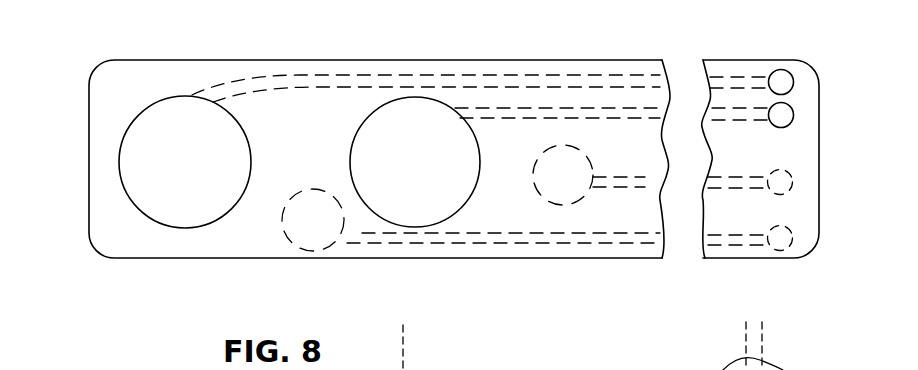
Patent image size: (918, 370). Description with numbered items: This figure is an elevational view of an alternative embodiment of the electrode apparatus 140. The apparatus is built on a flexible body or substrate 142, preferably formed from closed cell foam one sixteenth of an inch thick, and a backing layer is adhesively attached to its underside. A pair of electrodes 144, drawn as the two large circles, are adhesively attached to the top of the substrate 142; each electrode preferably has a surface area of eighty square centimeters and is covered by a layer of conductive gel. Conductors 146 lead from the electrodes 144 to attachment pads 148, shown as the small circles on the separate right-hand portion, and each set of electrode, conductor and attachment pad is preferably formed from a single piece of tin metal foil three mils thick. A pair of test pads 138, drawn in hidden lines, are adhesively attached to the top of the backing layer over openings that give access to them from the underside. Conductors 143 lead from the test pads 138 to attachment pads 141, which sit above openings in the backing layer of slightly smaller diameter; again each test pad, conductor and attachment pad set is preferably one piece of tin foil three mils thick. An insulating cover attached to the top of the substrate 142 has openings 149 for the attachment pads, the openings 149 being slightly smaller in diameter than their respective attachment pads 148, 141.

The electrode apparatus 140 is at (433, 164).
The substrate 142 is at (155, 243).
The electrodes 144 is at (172, 202).
The test pads 138 is at (310, 232).
The conductors 146 is at (542, 118).
The conductors 143 is at (625, 177).
The attachment pads 148 is at (782, 117).
The attachment pads 141 is at (781, 187).
The openings 149 is at (712, 369).